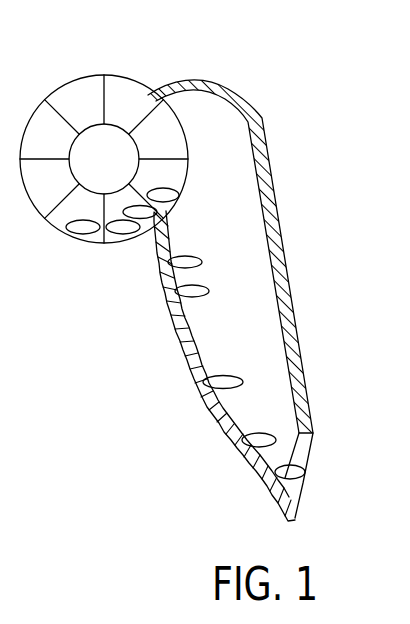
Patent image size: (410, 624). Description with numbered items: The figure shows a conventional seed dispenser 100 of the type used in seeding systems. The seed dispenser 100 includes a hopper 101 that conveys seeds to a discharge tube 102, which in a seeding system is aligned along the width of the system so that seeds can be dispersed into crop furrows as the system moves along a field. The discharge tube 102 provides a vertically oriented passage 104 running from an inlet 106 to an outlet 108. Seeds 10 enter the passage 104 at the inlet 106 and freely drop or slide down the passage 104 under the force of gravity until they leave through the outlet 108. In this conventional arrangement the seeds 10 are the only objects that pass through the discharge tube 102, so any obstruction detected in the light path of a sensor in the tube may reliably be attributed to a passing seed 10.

The seed dispenser 100 is at (326, 90).
The hopper 101 is at (81, 238).
The inlet 106 is at (142, 240).
The discharge tube 102 is at (273, 252).
The vertically oriented passage 104 is at (250, 347).
The seeds 10 is at (180, 298).
The outlet 108 is at (308, 458).